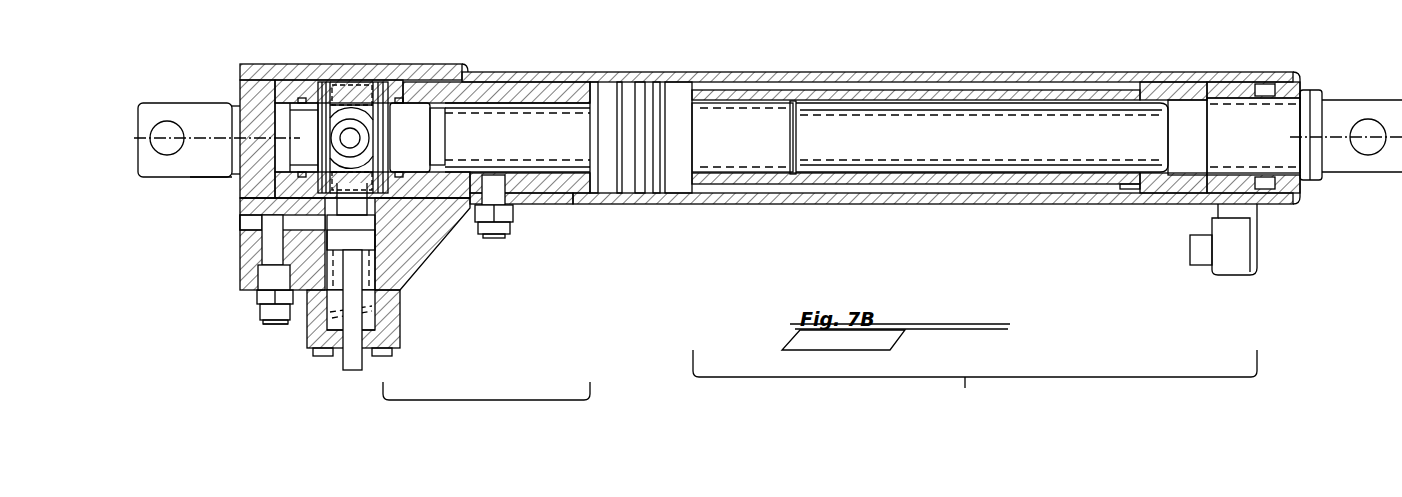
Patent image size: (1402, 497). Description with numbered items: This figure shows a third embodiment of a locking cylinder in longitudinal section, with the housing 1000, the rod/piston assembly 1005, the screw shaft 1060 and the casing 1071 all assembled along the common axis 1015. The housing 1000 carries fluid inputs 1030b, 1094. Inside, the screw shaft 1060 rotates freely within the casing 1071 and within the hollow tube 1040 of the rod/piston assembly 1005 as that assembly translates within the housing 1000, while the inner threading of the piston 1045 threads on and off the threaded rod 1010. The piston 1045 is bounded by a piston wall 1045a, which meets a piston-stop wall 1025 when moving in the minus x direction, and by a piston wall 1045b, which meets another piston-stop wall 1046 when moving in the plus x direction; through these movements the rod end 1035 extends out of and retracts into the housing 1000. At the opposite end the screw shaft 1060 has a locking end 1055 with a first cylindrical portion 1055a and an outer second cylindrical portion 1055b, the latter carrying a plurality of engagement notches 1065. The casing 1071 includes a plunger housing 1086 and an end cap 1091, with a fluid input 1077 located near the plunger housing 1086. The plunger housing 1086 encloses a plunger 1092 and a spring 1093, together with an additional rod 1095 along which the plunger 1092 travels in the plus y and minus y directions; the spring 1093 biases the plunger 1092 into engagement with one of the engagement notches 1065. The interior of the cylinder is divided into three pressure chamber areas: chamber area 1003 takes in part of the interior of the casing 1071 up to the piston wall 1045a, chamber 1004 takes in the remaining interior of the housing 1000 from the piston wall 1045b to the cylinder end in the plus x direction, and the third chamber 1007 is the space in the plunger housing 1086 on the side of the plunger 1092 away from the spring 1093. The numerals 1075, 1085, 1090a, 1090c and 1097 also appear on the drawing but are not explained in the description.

The housing 1000 is at (880, 72).
The pressure chamber area 1003 is at (486, 410).
The chamber 1004 is at (975, 382).
The rod/piston assembly 1005 is at (948, 96).
The third chamber 1007 is at (455, 225).
The threaded rod 1010 is at (1012, 143).
The common axis 1015 is at (141, 140).
The piston-stop wall 1025 is at (593, 92).
The fluid input 1030b is at (1217, 207).
The rod end 1035 is at (1337, 105).
The hollow tube 1040 is at (1068, 90).
The piston 1045 is at (637, 117).
The piston wall 1045a is at (596, 90).
The piston wall 1045b is at (700, 88).
The piston-stop wall 1046 is at (1130, 72).
The locking end 1055 is at (367, 78).
The first cylindrical portion 1055a is at (298, 128).
The outer second cylindrical portion 1055b is at (330, 198).
The screw shaft 1060 is at (1043, 148).
The engagement notches 1065 is at (350, 125).
The casing 1071 is at (244, 66).
The seal 1075 is at (615, 85).
The fluid input 1077 is at (280, 326).
The passage 1085 is at (239, 4).
The plunger housing 1086 is at (397, 357).
The spacer 1090a is at (448, 86).
The spacer 1090c is at (363, 90).
The end cap 1091 is at (197, 179).
The plunger 1092 is at (378, 298).
The spring 1093 is at (375, 313).
The fluid input 1094 is at (505, 236).
The rod 1095 is at (355, 372).
The fitting 1097 is at (275, 257).